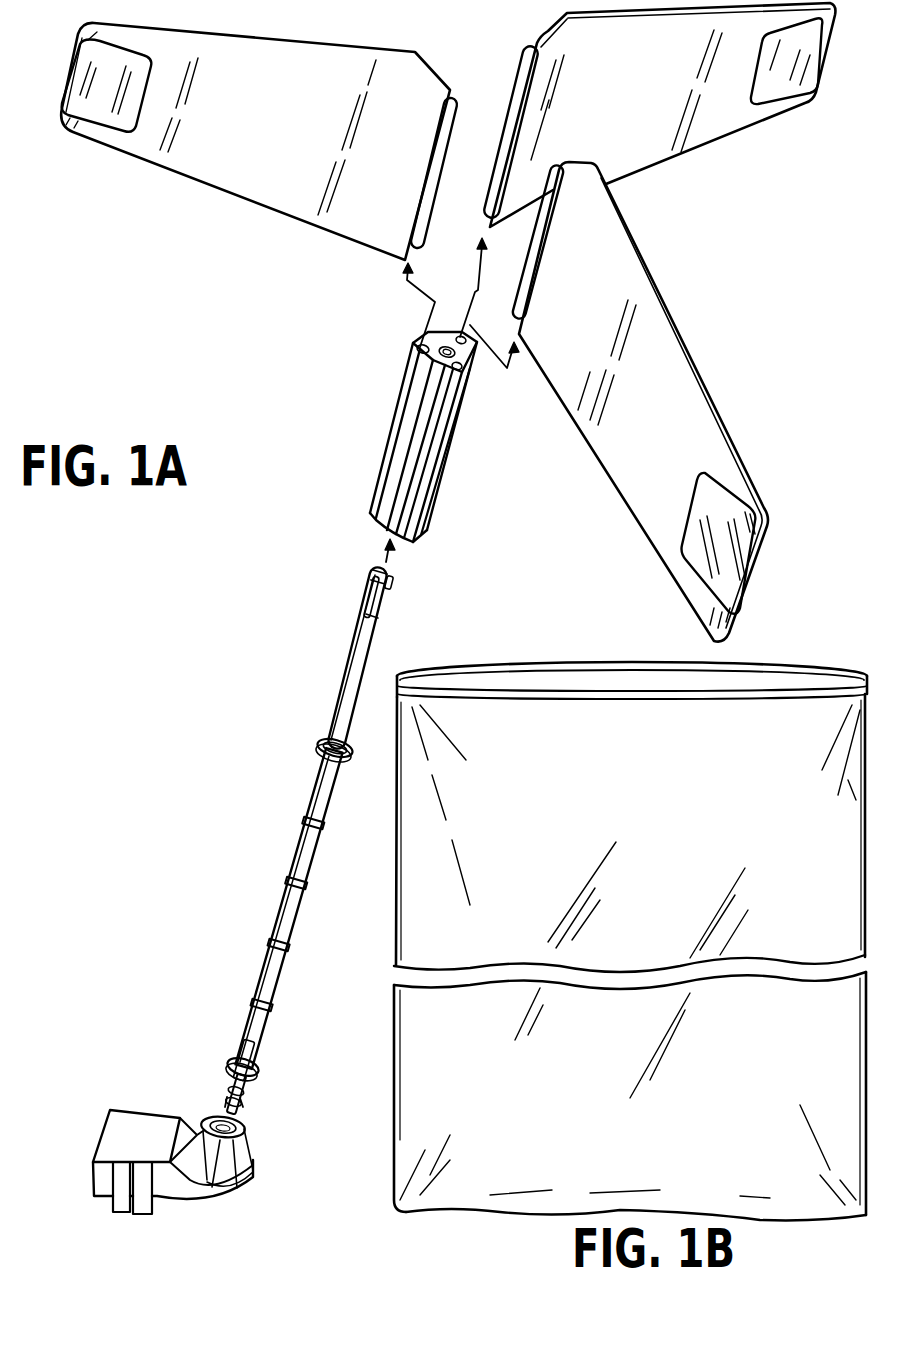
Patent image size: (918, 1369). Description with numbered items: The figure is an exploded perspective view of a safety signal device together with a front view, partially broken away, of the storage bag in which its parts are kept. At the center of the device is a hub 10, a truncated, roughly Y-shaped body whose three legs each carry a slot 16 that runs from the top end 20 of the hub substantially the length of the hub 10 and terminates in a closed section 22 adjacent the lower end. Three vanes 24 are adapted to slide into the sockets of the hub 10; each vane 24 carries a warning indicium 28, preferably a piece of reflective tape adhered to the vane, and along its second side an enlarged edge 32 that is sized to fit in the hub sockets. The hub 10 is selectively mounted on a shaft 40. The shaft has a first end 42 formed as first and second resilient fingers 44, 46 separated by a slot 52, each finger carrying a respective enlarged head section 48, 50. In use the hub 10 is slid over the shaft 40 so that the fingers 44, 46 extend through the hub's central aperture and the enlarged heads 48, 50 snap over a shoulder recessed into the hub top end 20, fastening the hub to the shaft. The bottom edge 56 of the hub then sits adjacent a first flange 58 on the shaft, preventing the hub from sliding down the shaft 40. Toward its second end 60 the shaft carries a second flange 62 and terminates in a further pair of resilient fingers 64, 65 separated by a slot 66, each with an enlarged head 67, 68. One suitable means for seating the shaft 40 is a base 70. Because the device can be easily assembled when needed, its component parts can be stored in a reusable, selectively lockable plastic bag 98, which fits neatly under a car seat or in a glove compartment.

In FIG. 1A, the hub 10 is at (411, 438).
In FIG. 1A, the slot 16 is at (457, 390).
In FIG. 1A, the top end 20 is at (421, 357).
In FIG. 1A, the closed section 22 is at (430, 530).
In FIG. 1A, the vane 24 is at (222, 201).
In FIG. 1A, the warning indicium 28 is at (110, 118).
In FIG. 1A, the enlarged edge 32 is at (462, 90).
In FIG. 1A, the shaft 40 is at (322, 848).
In FIG. 1A, the first end 42 is at (374, 652).
In FIG. 1A, the first resilient finger 44 is at (371, 612).
In FIG. 1A, the second resilient finger 46 is at (381, 603).
In FIG. 1A, the enlarged head section 48 is at (371, 580).
In FIG. 1A, the enlarged head section 50 is at (394, 582).
In FIG. 1A, the slot 52 is at (373, 566).
In FIG. 1A, the bottom edge 56 is at (380, 523).
In FIG. 1A, the first flange 58 is at (318, 744).
In FIG. 1A, the second end 60 is at (258, 1062).
In FIG. 1A, the second flange 62 is at (230, 1058).
In FIG. 1A, the resilient finger 64 is at (228, 1083).
In FIG. 1A, the resilient finger 65 is at (245, 1091).
In FIG. 1A, the slot 66 is at (245, 1127).
In FIG. 1A, the enlarged head 67 is at (227, 1100).
In FIG. 1A, the enlarged head 68 is at (242, 1107).
In FIG. 1A, the base 70 is at (186, 1161).
In FIG. 1B, the plastic bag 98 is at (533, 712).